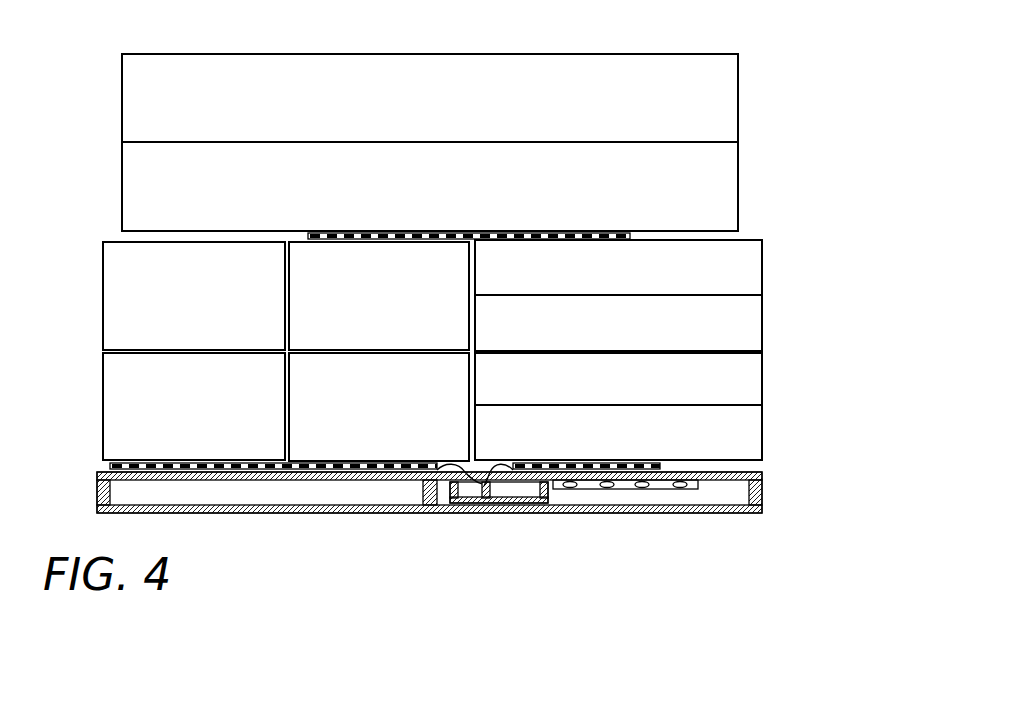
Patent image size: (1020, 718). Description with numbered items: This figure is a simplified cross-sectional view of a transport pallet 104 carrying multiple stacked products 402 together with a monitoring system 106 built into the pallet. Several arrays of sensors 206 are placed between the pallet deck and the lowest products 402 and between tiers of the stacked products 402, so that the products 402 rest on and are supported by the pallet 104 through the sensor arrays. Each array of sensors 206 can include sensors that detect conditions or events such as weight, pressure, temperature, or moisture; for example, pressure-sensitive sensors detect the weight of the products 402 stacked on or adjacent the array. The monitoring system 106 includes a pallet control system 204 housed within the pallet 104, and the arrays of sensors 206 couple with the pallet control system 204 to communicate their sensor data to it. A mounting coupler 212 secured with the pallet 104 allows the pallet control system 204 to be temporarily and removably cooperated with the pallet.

The products 402 is at (719, 148).
The array of sensors 206 is at (610, 228).
The transport pallet 104 is at (778, 486).
The monitoring system 106 is at (441, 526).
The pallet control system 204 is at (510, 488).
The mounting coupler 212 is at (553, 493).